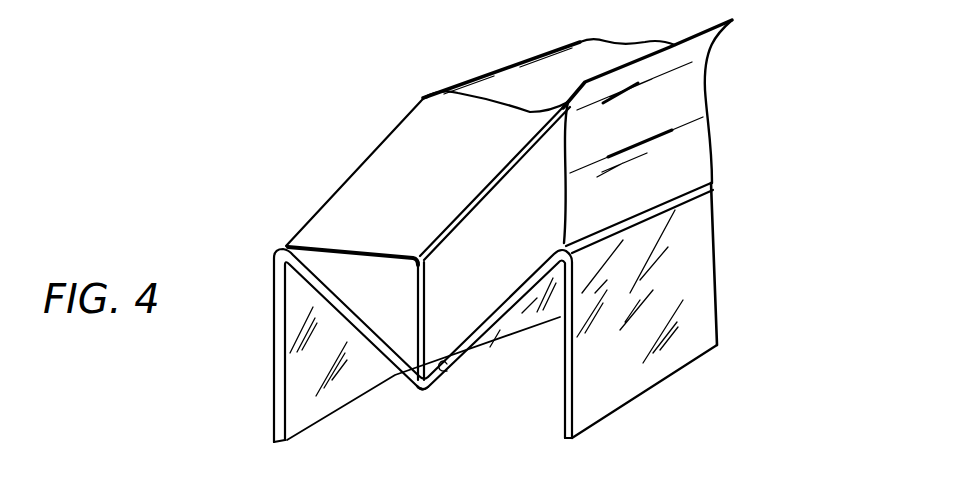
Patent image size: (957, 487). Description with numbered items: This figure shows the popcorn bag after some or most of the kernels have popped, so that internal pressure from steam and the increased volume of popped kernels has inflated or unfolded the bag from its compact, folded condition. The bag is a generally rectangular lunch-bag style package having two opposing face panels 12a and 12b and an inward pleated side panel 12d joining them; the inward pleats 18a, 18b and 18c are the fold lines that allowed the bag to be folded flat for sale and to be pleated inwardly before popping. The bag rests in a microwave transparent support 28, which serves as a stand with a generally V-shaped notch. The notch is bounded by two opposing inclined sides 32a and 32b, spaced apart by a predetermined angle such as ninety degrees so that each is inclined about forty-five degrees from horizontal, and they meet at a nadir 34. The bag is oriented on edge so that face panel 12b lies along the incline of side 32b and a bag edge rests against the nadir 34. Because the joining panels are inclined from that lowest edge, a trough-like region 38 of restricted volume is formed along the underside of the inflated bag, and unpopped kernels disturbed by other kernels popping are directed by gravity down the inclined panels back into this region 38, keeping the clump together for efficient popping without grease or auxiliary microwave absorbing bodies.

The face panel 12a is at (522, 75).
The face panel 12b is at (692, 160).
The pleated side panel 12d is at (440, 118).
The inward pleat 18a is at (473, 197).
The inward pleat 18b is at (337, 243).
The inward pleat 18c is at (424, 337).
The microwave transparent support 28 is at (726, 305).
The side of notch 32a is at (327, 305).
The side of notch 32b is at (497, 300).
The nadir of notch 34 is at (420, 383).
The trough-like region 38 is at (443, 364).